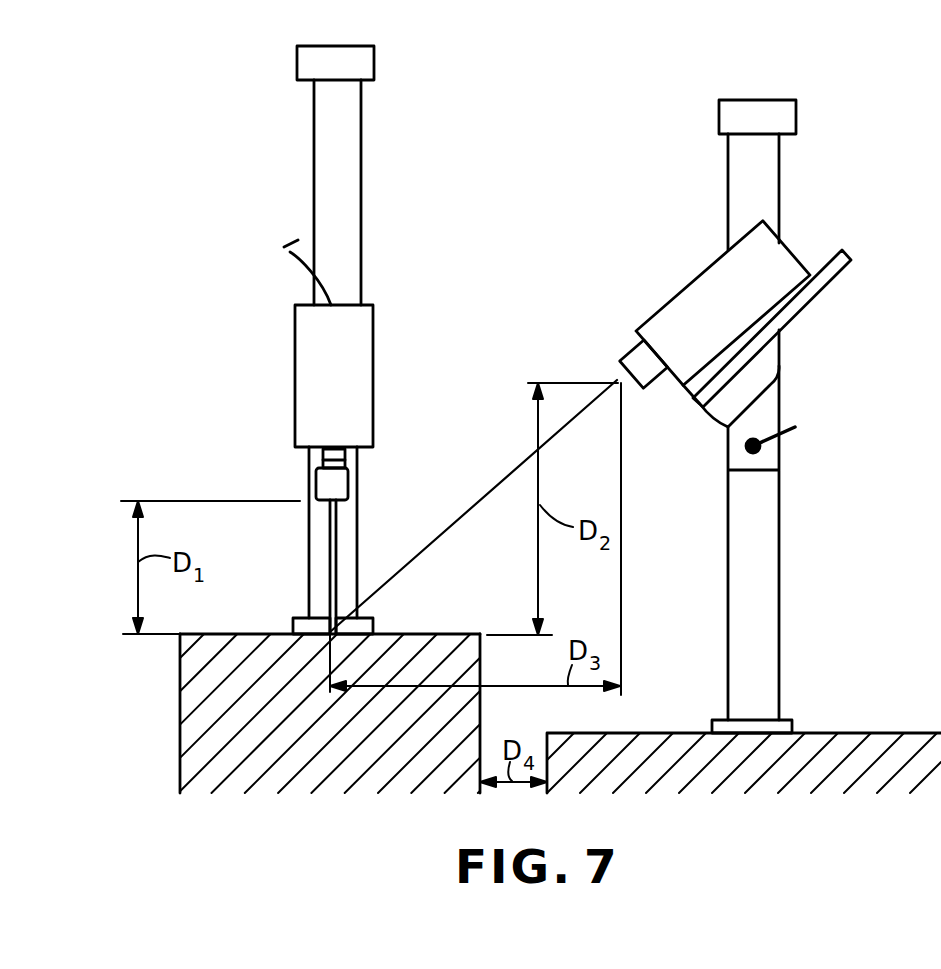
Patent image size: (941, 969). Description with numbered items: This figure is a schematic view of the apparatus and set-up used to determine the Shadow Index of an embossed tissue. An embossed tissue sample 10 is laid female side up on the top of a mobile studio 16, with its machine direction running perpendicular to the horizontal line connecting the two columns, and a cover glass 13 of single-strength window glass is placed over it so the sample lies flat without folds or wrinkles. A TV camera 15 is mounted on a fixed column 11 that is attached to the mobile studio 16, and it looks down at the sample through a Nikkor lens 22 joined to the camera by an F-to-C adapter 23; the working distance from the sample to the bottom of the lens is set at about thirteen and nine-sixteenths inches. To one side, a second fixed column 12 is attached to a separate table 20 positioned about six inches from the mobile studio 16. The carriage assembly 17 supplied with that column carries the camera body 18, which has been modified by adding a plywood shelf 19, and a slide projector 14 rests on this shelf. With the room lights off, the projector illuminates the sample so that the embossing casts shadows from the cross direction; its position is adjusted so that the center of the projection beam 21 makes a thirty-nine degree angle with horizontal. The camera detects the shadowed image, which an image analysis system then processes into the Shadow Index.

The embossed tissue sample 10 is at (382, 633).
The fixed column 11 is at (361, 157).
The second fixed column 12 is at (779, 183).
The cover glass 13 is at (366, 620).
The slide projector 14 is at (743, 312).
The TV camera 15 is at (350, 404).
The mobile studio 16 is at (180, 700).
The carriage assembly 17 is at (781, 410).
The camera body 18 is at (783, 372).
The shelf 19 is at (846, 255).
The table 20 is at (857, 733).
The projection beam 21 is at (481, 498).
The lens 22 is at (348, 487).
The F-to-C adapter 23 is at (345, 458).